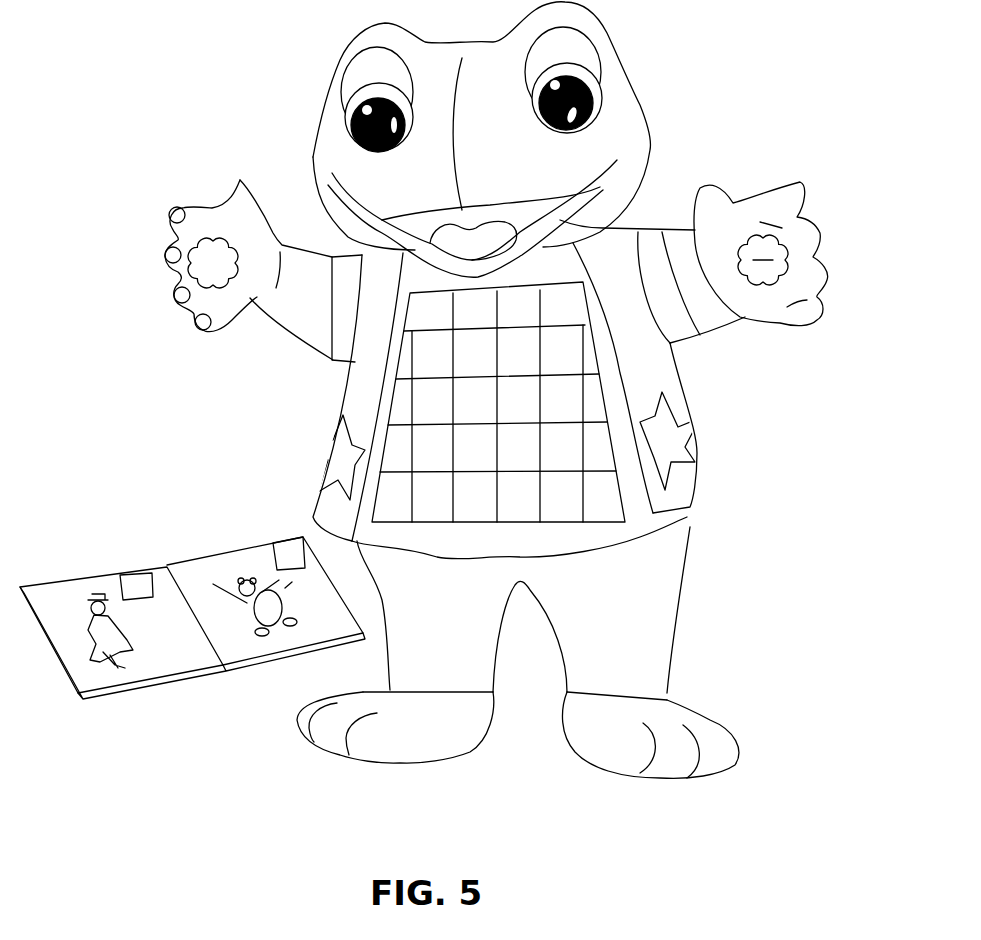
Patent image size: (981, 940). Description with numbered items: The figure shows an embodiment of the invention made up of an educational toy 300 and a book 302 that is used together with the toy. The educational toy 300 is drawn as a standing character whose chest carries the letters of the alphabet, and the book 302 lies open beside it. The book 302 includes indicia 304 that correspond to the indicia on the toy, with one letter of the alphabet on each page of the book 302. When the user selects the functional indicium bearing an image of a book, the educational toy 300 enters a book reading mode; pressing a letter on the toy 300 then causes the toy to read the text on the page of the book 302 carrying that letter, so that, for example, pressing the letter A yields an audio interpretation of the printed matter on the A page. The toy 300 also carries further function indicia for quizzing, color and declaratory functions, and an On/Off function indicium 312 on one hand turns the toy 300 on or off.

The educational toy 300 is at (754, 541).
The book 302 is at (196, 645).
The indicia 304 is at (130, 577).
The On/Off function indicium 312 is at (764, 284).